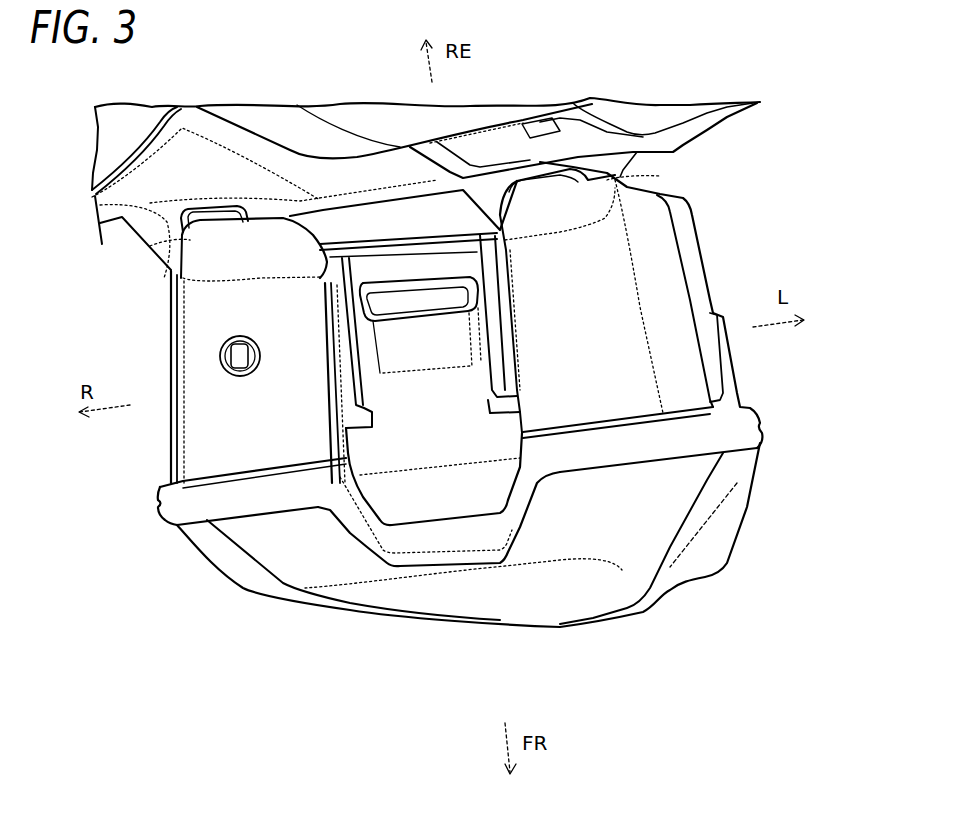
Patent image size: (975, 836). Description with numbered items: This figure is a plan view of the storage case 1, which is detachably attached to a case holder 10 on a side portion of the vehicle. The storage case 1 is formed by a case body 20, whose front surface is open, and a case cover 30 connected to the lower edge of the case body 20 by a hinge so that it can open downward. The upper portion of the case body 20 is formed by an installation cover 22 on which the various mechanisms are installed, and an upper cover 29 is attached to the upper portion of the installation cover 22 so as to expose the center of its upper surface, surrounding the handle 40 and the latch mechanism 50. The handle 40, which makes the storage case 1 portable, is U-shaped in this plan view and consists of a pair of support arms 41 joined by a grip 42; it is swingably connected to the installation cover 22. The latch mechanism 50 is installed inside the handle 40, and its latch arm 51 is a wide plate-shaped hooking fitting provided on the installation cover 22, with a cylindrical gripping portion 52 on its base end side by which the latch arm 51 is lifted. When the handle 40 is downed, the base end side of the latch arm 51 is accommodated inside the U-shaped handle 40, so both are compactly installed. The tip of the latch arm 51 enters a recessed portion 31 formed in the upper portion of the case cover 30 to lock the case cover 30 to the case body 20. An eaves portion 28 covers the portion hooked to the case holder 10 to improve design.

The storage case 1 is at (667, 618).
The case holder 10 is at (304, 158).
The case body 20 is at (707, 232).
The installation cover 22 is at (683, 210).
The eaves portion 28 is at (170, 237).
The upper cover 29 is at (670, 307).
The case cover 30 is at (598, 640).
The recessed portion 31 is at (483, 532).
The handle 40 is at (320, 292).
The support arms 41 is at (327, 333).
The grip 42 is at (400, 247).
The latch mechanism 50 is at (392, 500).
The latch arm 51 is at (467, 500).
The gripping portion 52 is at (490, 287).